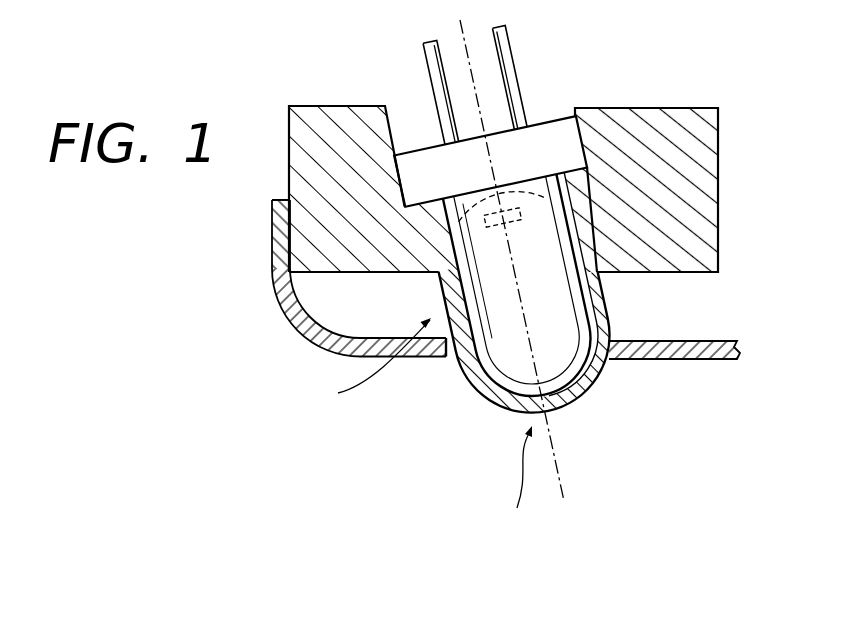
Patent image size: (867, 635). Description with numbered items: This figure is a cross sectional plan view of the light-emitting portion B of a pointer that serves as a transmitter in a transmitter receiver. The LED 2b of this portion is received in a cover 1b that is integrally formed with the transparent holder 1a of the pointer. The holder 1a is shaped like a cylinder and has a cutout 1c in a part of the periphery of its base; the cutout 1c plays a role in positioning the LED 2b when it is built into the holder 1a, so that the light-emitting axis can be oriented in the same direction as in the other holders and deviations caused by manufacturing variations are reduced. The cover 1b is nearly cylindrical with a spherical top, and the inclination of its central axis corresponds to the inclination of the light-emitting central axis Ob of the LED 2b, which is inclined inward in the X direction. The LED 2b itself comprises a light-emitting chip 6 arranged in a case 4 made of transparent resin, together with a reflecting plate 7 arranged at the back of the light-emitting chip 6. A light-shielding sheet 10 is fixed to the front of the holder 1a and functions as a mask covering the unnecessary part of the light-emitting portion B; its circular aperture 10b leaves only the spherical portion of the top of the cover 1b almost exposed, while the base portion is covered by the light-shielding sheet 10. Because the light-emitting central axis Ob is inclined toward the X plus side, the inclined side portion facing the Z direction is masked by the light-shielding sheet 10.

The holder 1a is at (655, 273).
The cover 1b is at (575, 401).
The cutout 1c is at (404, 183).
The LED 2b is at (498, 386).
The case 4 is at (600, 381).
The light-emitting chip 6 is at (527, 192).
The reflecting plate 7 is at (505, 207).
The light-shielding sheet 10 is at (710, 360).
The aperture 10b is at (449, 358).
The light-emitting portion B is at (514, 480).
The light-emitting central axis Ob is at (523, 277).